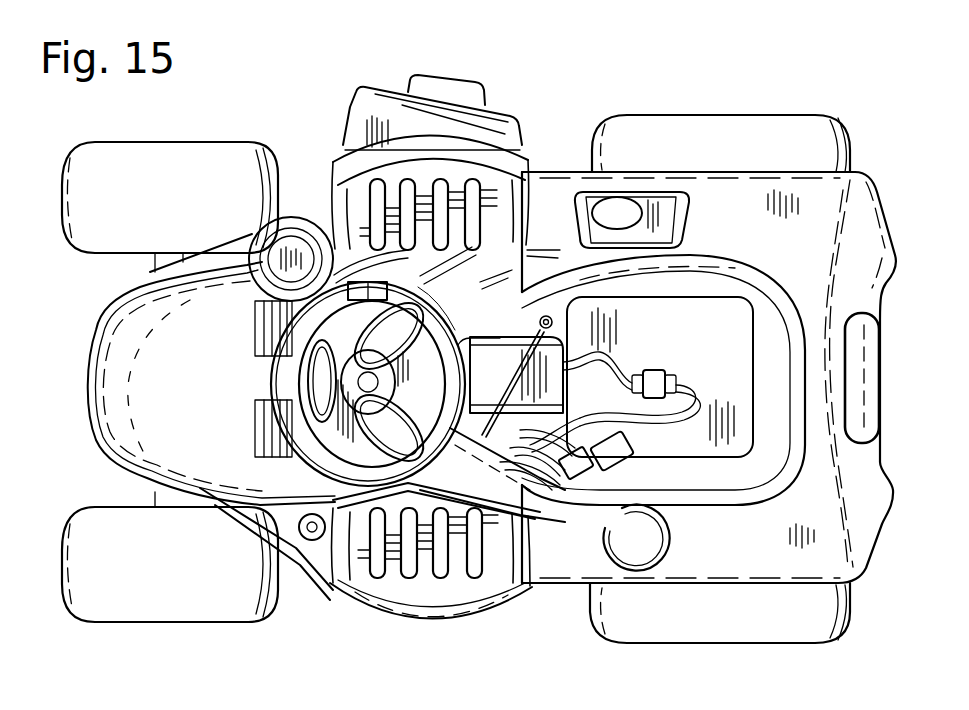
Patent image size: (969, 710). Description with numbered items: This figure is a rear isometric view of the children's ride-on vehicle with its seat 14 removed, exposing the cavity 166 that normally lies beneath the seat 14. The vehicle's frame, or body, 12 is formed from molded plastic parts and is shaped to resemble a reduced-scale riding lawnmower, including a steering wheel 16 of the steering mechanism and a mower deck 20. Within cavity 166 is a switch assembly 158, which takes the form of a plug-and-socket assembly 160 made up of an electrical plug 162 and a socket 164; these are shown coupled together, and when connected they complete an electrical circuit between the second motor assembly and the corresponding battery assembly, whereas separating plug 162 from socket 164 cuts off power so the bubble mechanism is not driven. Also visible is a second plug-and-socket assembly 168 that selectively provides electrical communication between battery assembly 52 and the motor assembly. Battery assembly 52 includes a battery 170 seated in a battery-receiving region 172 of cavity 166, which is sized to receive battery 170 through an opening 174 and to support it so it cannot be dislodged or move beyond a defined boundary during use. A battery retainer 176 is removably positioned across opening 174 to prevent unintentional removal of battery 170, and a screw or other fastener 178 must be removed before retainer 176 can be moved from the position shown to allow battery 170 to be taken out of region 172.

The frame 12 is at (768, 575).
The seat 14 is at (773, 283).
The steering wheel 16 is at (262, 384).
The mower deck 20 is at (425, 577).
The battery assembly 52 is at (491, 339).
The switch assembly 158 is at (598, 498).
The plug-and-socket assembly 160 is at (598, 476).
The electrical plug 162 is at (578, 477).
The socket 164 is at (610, 463).
The cavity 166 is at (660, 293).
The plug-and-socket assembly 168 is at (650, 368).
The battery 170 is at (516, 375).
The battery-receiving region 172 is at (477, 334).
The opening 174 is at (490, 339).
The battery retainer 176 is at (498, 396).
The fastener 178 is at (545, 315).